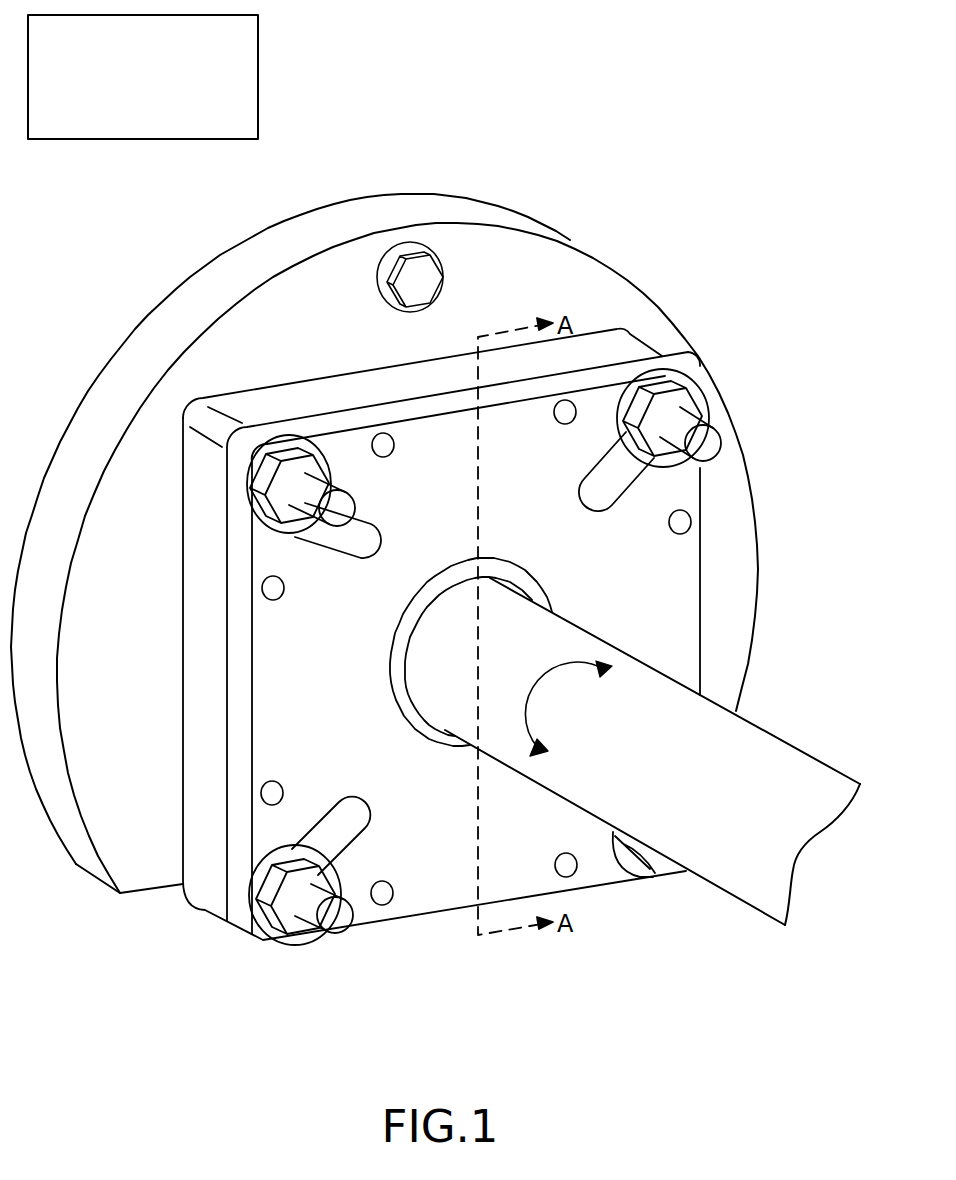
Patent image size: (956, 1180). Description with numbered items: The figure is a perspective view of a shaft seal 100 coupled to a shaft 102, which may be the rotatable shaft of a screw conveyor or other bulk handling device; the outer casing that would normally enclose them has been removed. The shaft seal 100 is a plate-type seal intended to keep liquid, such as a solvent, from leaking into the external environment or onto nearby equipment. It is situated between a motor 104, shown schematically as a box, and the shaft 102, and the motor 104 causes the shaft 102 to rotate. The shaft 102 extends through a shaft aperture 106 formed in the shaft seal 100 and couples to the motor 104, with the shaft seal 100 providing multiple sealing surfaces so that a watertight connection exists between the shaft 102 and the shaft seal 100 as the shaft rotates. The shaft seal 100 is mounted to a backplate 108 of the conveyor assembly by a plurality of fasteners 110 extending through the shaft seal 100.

The shaft seal 100 is at (644, 340).
The shaft 102 is at (752, 733).
The motor 104 is at (200, 272).
The shaft aperture 106 is at (503, 572).
The backplate 108 is at (558, 255).
The fasteners 110 is at (710, 448).